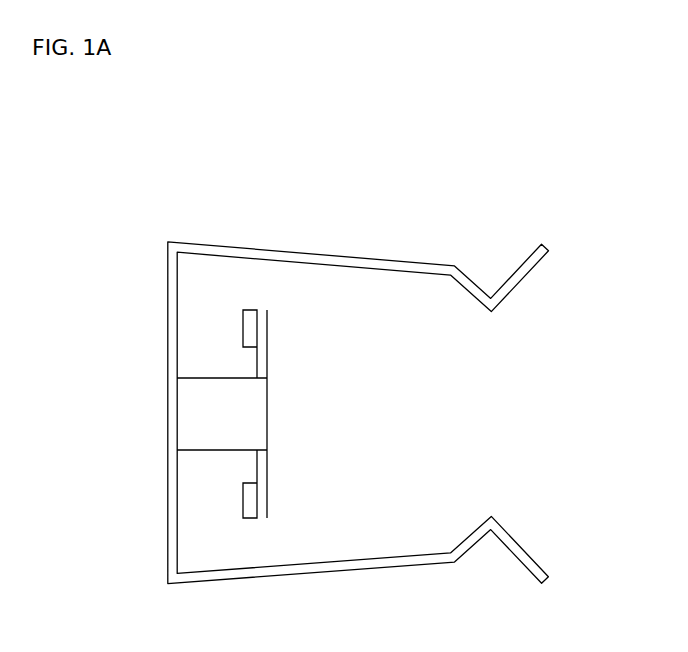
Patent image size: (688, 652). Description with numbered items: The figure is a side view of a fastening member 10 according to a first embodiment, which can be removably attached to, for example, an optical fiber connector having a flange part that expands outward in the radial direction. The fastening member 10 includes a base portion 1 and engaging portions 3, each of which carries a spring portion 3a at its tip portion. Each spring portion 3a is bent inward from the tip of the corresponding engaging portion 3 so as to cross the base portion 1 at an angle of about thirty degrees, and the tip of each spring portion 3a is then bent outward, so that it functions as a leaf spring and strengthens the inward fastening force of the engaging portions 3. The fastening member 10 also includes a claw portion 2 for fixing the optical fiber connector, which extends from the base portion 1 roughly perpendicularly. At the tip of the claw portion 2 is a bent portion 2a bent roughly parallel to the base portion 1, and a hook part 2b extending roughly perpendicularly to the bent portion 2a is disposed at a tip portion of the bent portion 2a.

The fastening member 10 is at (448, 188).
The base portion 1 is at (177, 303).
The claw portion 2 is at (193, 410).
The bent portion 2a is at (265, 357).
The hook part 2b is at (250, 500).
The engaging portion 3 is at (360, 257).
The spring portion 3a is at (470, 288).